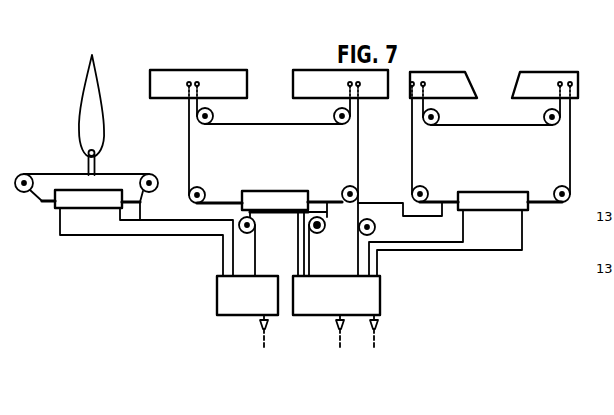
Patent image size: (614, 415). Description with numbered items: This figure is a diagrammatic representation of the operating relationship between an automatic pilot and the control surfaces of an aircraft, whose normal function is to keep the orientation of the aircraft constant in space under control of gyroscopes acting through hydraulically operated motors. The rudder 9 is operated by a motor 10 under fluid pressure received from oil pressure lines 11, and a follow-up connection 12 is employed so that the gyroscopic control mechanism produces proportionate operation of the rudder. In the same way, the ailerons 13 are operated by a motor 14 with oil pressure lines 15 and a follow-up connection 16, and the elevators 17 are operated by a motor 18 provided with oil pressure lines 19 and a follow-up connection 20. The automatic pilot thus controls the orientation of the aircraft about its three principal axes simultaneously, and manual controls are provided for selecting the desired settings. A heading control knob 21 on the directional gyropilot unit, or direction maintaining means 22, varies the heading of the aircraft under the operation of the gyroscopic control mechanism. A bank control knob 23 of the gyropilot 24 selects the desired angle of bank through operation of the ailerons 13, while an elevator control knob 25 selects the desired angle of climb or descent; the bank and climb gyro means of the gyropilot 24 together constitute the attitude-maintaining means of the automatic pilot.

The rudder 9 is at (86, 86).
The motor 10 is at (97, 197).
The oil pressure lines 11 is at (118, 221).
The follow-up connection 12 is at (173, 213).
The ailerons 13 is at (292, 90).
The motor 14 is at (273, 198).
The oil pressure lines 15 is at (298, 229).
The follow-up connection 16 is at (310, 257).
The elevators 17 is at (516, 87).
The motor 18 is at (496, 186).
The oil pressure lines 19 is at (522, 231).
The follow-up connection 20 is at (405, 216).
The heading control knob 21 is at (261, 327).
The directional gyropilot unit 22 is at (219, 279).
The bank control knob 23 is at (336, 327).
The gyropilot 24 is at (380, 281).
The elevator control knob 25 is at (378, 327).